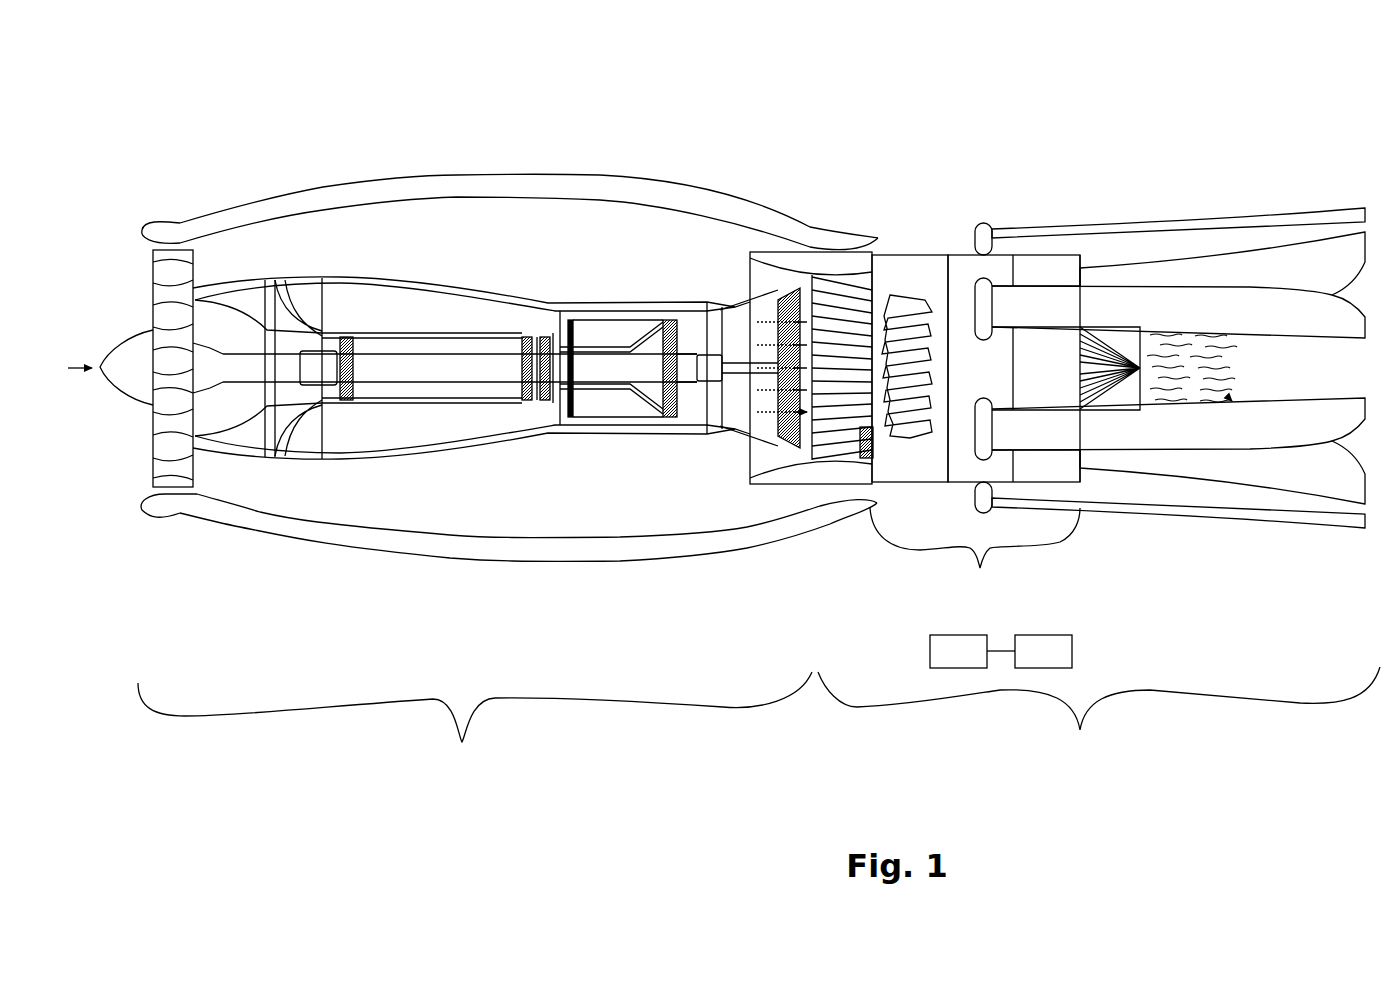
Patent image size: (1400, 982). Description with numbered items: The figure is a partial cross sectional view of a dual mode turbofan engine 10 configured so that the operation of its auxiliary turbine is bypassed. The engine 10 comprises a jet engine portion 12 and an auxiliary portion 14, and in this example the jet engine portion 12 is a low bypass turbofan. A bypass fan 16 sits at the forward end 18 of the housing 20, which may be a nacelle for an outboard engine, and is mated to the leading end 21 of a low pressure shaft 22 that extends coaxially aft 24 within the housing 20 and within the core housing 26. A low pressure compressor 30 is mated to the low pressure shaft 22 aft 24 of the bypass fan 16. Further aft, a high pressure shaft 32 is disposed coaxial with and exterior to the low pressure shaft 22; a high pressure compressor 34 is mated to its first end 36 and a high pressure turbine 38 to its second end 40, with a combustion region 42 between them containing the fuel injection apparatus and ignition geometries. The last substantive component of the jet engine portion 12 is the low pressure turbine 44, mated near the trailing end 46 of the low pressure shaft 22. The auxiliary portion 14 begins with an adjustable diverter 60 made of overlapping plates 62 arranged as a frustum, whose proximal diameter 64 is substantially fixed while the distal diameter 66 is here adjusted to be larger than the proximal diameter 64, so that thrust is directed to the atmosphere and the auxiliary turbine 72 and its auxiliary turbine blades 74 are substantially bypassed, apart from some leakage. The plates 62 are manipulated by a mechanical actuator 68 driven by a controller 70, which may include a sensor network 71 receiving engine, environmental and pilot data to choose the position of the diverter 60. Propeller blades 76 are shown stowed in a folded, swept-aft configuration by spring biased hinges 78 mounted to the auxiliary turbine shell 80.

The engine 10 is at (553, 97).
The jet engine portion 12 is at (475, 723).
The auxiliary portion 14 is at (1099, 714).
The bypass fan 16 is at (178, 257).
The forward end 18 is at (93, 367).
The housing 20 is at (783, 197).
The leading end 21 is at (128, 430).
The low pressure shaft 22 is at (250, 335).
The aft 24 is at (1273, 368).
The core housing 26 is at (706, 305).
The low pressure compressor 30 is at (346, 402).
The high pressure shaft 32 is at (590, 373).
The high pressure compressor 34 is at (547, 390).
The first end 36 is at (522, 385).
The high pressure turbine 38 is at (668, 413).
The second end 40 is at (683, 380).
The combustion region 42 is at (610, 400).
The low pressure turbine 44 is at (790, 445).
The trailing end 46 is at (770, 352).
The adjustable diverter 60 is at (808, 318).
The overlapping plates 62 is at (860, 433).
The proximal diameter 64 is at (878, 318).
The distal diameter 66 is at (833, 318).
The mechanical actuator 68 is at (866, 460).
The controller 70 is at (893, 465).
The sensor network 71 is at (1029, 651).
The auxiliary turbine 72 is at (975, 429).
The auxiliary turbine blades 74 is at (900, 320).
The propeller blades 76 is at (1123, 298).
The spring biased hinges 78 is at (983, 292).
The auxiliary turbine shell 80 is at (982, 373).